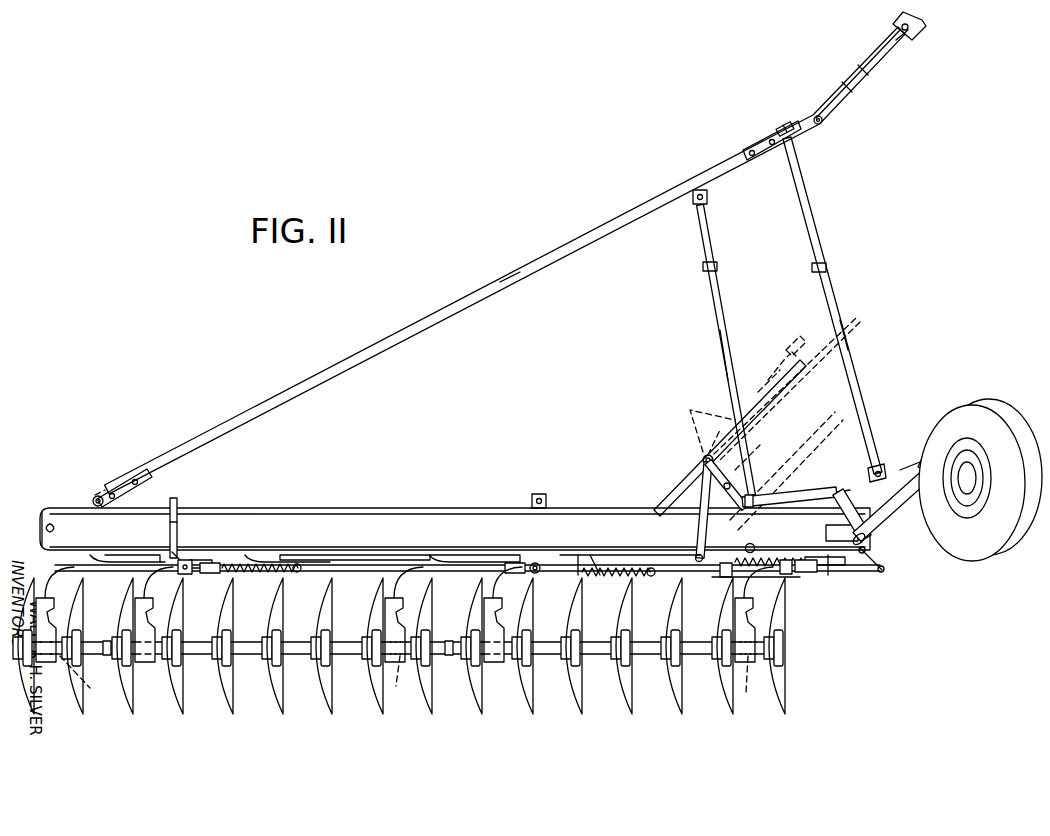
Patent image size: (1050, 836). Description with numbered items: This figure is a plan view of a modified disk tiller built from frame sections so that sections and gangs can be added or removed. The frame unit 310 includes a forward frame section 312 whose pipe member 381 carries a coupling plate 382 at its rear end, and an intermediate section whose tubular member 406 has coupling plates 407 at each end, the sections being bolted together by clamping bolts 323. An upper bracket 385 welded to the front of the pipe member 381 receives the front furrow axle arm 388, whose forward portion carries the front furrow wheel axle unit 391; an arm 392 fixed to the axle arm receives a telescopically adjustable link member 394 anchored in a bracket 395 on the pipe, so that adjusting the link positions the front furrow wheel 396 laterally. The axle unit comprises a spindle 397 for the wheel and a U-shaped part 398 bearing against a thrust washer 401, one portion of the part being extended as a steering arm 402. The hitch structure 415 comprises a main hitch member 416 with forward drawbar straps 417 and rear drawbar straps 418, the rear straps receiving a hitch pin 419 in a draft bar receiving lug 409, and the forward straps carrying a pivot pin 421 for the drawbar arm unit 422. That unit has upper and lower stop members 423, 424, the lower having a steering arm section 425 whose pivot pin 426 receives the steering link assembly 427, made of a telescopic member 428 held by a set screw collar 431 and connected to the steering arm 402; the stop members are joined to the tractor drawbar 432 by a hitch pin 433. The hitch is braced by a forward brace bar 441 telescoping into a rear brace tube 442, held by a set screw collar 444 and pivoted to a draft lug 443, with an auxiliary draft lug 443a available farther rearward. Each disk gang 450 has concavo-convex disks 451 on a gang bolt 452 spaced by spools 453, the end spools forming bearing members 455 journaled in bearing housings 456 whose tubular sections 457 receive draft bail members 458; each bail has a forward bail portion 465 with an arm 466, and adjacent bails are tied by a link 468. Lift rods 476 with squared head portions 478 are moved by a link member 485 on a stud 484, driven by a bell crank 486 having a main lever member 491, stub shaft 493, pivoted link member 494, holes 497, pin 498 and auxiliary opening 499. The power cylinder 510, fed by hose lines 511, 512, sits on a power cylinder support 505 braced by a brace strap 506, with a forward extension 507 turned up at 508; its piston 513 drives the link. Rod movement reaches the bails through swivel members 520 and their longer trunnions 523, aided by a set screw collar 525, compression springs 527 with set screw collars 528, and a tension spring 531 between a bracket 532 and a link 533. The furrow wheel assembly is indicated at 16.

The wheel assembly 16 is at (1014, 374).
The frame unit 310 is at (392, 472).
The forward frame section 312 is at (482, 509).
The clamping bolts 323 is at (170, 504).
The pipe or tubular member 381 is at (406, 513).
The coupling plate 382 is at (178, 550).
The upper bracket 385 is at (866, 553).
The front furrow axle arm 388 is at (910, 505).
The front furrow wheel axle unit 391 is at (907, 458).
The arm 392 is at (852, 506).
The telescopically adjustable link member 394 is at (806, 490).
The bracket 395 is at (752, 494).
The front furrow wheel 396 is at (1006, 410).
The spindle 397 is at (975, 452).
The U-shaped part 398 is at (952, 445).
The thrust or abutment washer 401 is at (932, 446).
The steering arm 402 is at (870, 470).
The frame pipe or tubular member 406 is at (50, 515).
The coupling plate 407 is at (168, 523).
The draft bar receiving lug 409 is at (97, 494).
The hitch structure 415 is at (548, 236).
The main hitch member 416 is at (405, 322).
The forward drawbar straps 417 is at (745, 152).
The rear drawbar straps 418 is at (131, 475).
The hitch pin 419 is at (93, 501).
The pivot pin 421 is at (823, 124).
The drawbar arm unit 422 is at (845, 76).
The upper stop member 423 is at (870, 76).
The lower stop member 424 is at (850, 95).
The steering arm section 425 is at (785, 124).
The pivot pin 426 is at (775, 130).
The steering link assembly 427 is at (845, 300).
The telescopic member 428 is at (802, 192).
The set screw collar 431 is at (827, 267).
The tractor drawbar 432 is at (916, 30).
The hitch pin 433 is at (905, 42).
The forward brace bar 441 is at (700, 243).
The rear brace tube 442 is at (722, 340).
The draft lug 443 is at (770, 500).
The auxiliary draft lug 443a is at (539, 494).
The set screw collar 444 is at (717, 267).
The disk gang 450 is at (163, 727).
The concavo-convex disks 451 is at (292, 714).
The gang bolt 452 is at (452, 658).
The spools 453 is at (300, 643).
The bearing members 455 is at (404, 676).
The bearing housings 456 is at (498, 660).
The tubular section 457 is at (52, 624).
The draft bail member 458 is at (56, 576).
The forward bail portion 465 is at (580, 558).
The arm 466 is at (92, 562).
The link 468 is at (146, 558).
The lift rod 476 is at (368, 562).
The squared head portion 478 is at (192, 575).
The stud 484 is at (539, 562).
The link member 485 is at (595, 556).
The bell crank 486 is at (678, 492).
The main lever member 491 is at (696, 545).
The stub shaft 493 is at (728, 504).
The pivoted link member 494 is at (702, 448).
The holes 497 is at (702, 462).
The pin 498 is at (694, 560).
The auxiliary opening 499 is at (720, 573).
The power cylinder support 505 is at (752, 384).
The brace strap 506 is at (748, 443).
The forward extension 507 is at (775, 406).
The upturned portion 508 is at (786, 356).
The power cylinder 510 is at (762, 356).
The hose line 511 is at (786, 345).
The hose line 512 is at (848, 336).
The piston 513 is at (704, 428).
The swivel member 520 is at (242, 574).
The longer trunnion 523 is at (206, 560).
The set screw collar 525 is at (792, 575).
The compression spring 527 is at (275, 564).
The set screw collar 528 is at (302, 566).
The tension spring 531 is at (756, 546).
The bracket 532 is at (712, 582).
The link 533 is at (795, 558).